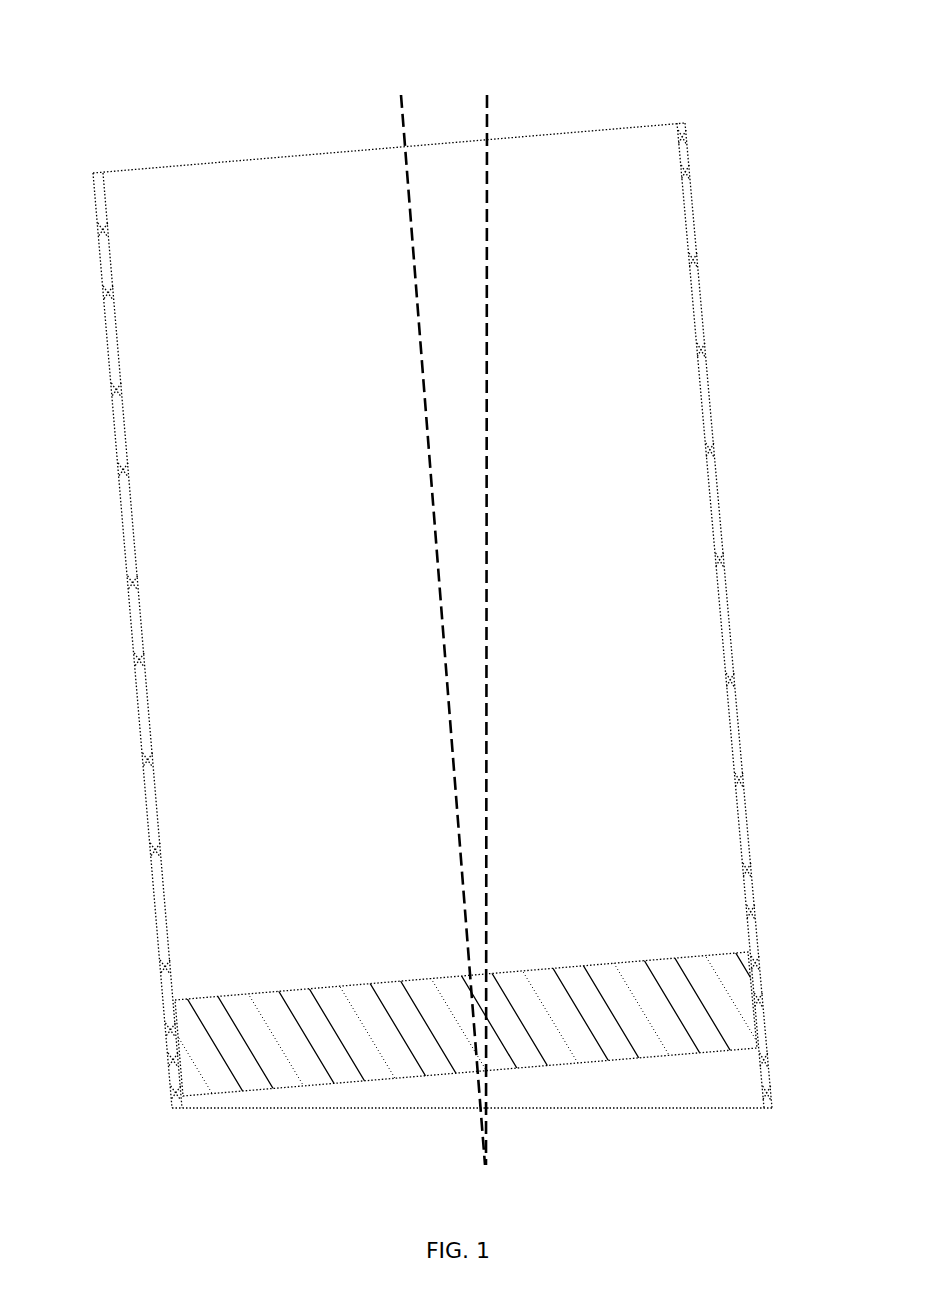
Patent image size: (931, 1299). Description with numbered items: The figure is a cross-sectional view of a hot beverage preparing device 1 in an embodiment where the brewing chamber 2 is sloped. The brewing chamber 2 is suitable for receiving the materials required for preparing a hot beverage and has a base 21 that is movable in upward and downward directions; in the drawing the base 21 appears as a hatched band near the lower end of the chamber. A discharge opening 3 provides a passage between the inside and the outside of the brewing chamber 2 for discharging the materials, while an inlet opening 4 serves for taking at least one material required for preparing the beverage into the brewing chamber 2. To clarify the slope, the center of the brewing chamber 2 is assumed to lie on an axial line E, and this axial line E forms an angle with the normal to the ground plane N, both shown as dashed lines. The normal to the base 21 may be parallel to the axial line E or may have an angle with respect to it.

The hot beverage preparing device 1 is at (566, 90).
The brewing chamber 2 is at (126, 543).
The discharge opening 3 is at (120, 267).
The inlet opening 4 is at (760, 888).
The base 21 is at (597, 1047).
The normal to the ground plane N is at (487, 349).
The axial line E is at (415, 292).